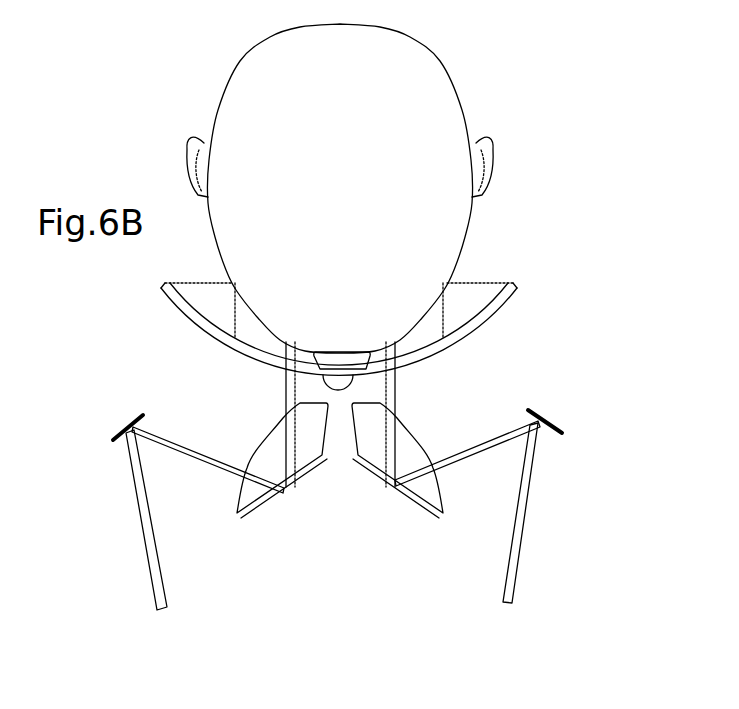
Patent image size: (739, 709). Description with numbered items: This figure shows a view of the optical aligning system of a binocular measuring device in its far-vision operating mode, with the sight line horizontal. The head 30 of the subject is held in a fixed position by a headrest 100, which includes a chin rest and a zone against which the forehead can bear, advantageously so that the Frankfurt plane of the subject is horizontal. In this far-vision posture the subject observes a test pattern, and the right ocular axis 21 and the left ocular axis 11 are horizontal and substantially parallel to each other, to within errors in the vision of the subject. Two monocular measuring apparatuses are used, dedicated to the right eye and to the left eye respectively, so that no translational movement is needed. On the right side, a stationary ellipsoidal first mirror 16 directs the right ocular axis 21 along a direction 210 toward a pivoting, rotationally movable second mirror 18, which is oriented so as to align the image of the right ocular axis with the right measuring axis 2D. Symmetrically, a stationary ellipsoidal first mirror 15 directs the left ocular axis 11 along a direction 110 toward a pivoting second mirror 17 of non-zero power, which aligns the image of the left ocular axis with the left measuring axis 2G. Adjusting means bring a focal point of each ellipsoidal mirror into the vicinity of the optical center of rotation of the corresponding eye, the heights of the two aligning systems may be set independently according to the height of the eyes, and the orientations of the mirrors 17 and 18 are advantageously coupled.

The head 30 is at (433, 83).
The headrest 100 is at (487, 297).
The right ocular axis 21 is at (283, 400).
The left ocular axis 11 is at (395, 381).
The stationary ellipsoidal first mirror 16 is at (263, 503).
The stationary ellipsoidal first mirror 15 is at (400, 500).
The direction 210 is at (193, 440).
The direction 110 is at (463, 457).
The pivoting second mirror 18 is at (142, 413).
The pivoting second mirror 17 is at (552, 423).
The right measuring axis 2D is at (147, 550).
The left measuring axis 2G is at (523, 543).